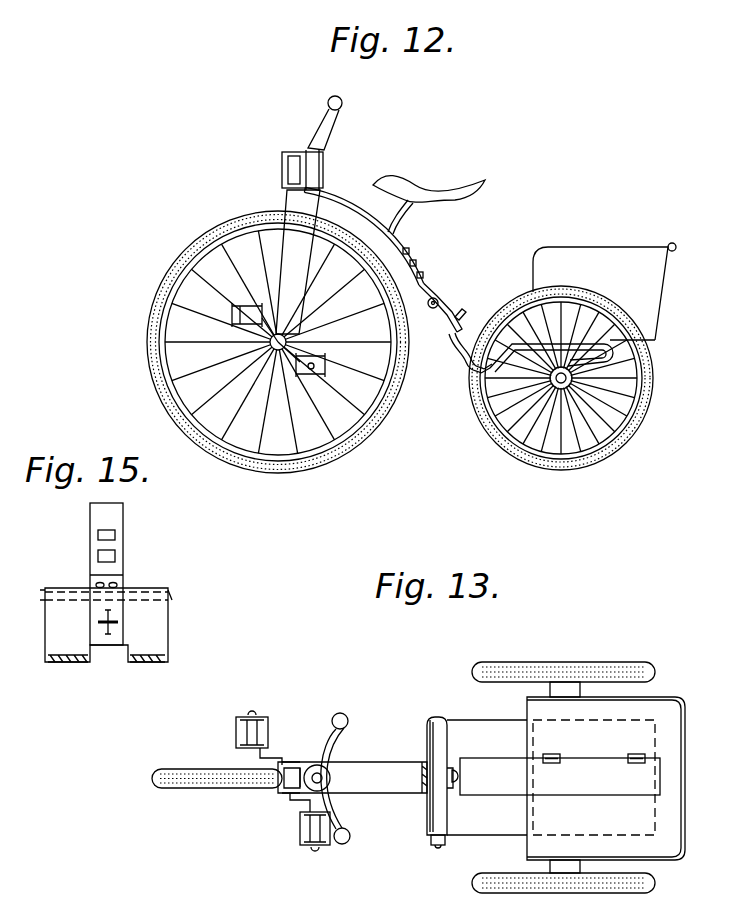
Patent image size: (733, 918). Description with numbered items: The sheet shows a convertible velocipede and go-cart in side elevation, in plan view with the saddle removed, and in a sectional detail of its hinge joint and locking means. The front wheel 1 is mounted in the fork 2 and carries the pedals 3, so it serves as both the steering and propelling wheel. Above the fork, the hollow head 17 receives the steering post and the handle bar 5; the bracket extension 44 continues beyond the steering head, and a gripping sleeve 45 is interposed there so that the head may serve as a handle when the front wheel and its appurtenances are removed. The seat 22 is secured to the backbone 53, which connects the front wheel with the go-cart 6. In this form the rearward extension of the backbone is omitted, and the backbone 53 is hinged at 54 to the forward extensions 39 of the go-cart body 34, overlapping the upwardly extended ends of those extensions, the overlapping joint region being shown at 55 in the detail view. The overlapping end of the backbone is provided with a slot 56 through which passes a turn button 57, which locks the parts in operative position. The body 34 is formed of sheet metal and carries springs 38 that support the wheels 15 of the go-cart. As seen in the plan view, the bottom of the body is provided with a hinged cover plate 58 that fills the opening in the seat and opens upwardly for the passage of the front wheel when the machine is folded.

In FIG. 12, the front wheel 1 is at (202, 244).
In FIG. 13, the front wheel 1 is at (180, 794).
In FIG. 12, the fork 2 is at (298, 262).
In FIG. 12, the pedals 3 is at (232, 310).
In FIG. 13, the pedals 3 is at (236, 733).
In FIG. 12, the handle bar 5 is at (326, 112).
In FIG. 13, the handle bar 5 is at (333, 738).
In FIG. 12, the rear carriage 6 is at (646, 319).
In FIG. 13, the rear carriage 6 is at (606, 774).
In FIG. 12, the supporting wheels 15 is at (654, 378).
In FIG. 13, the supporting wheels 15 is at (626, 666).
In FIG. 12, the hollow head 17 is at (318, 170).
In FIG. 12, the seat 22 is at (432, 188).
In FIG. 12, the body 34 is at (658, 283).
In FIG. 12, the springs 38 is at (616, 353).
In FIG. 12, the forward extensions 39 is at (471, 372).
In FIG. 15, the forward extensions 39 is at (68, 664).
In FIG. 13, the forward extensions 39 is at (474, 729).
In FIG. 12, the bracket extension 44 is at (290, 153).
In FIG. 13, the bracket extension 44 is at (297, 772).
In FIG. 12, the gripping sleeve 45 is at (283, 168).
In FIG. 13, the gripping sleeve 45 is at (288, 781).
In FIG. 12, the backbone 53 is at (342, 192).
In FIG. 15, the backbone 53 is at (118, 517).
In FIG. 13, the backbone 53 is at (343, 768).
In FIG. 12, the hinge 54 is at (440, 292).
In FIG. 13, the hinge 54 is at (436, 846).
In FIG. 12, the bracket 55 is at (452, 342).
In FIG. 15, the bracket 55 is at (58, 628).
In FIG. 13, the bracket 55 is at (437, 776).
In FIG. 15, the slot 56 is at (112, 612).
In FIG. 13, the slot 56 is at (448, 781).
In FIG. 12, the turn button 57 is at (463, 309).
In FIG. 15, the turn button 57 is at (118, 622).
In FIG. 13, the turn button 57 is at (460, 775).
In FIG. 13, the hinged cover plate 58 is at (560, 774).